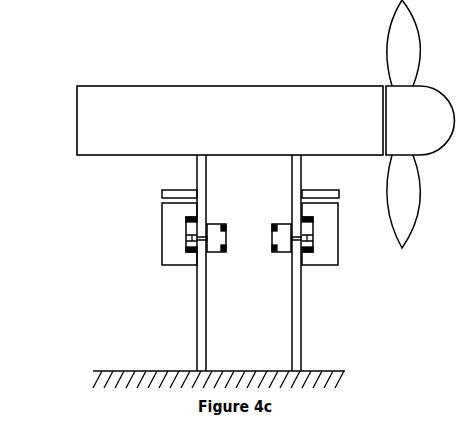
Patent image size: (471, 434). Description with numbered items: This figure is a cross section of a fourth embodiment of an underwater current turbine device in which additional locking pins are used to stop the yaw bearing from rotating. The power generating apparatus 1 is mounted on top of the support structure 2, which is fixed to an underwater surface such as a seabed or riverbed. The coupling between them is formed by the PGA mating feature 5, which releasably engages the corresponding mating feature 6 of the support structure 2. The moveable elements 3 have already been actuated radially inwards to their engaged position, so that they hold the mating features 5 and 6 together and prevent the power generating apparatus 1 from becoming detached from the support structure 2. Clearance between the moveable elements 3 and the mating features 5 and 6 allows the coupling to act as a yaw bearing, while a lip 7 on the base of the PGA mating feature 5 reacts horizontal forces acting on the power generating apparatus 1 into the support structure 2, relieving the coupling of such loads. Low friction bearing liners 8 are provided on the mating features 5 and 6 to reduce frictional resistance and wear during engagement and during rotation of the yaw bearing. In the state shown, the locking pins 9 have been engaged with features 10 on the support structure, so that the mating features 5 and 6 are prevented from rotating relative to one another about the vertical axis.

The power generating apparatus 1 is at (85, 120).
The support structure 2 is at (199, 333).
The moveable elements 3 is at (164, 233).
The mating feature 5 is at (193, 227).
The mating feature 6 is at (196, 243).
The lip 7 is at (182, 290).
The low friction bearing liners 8 is at (313, 251).
The locking pins 9 is at (281, 231).
The features 10 is at (290, 251).